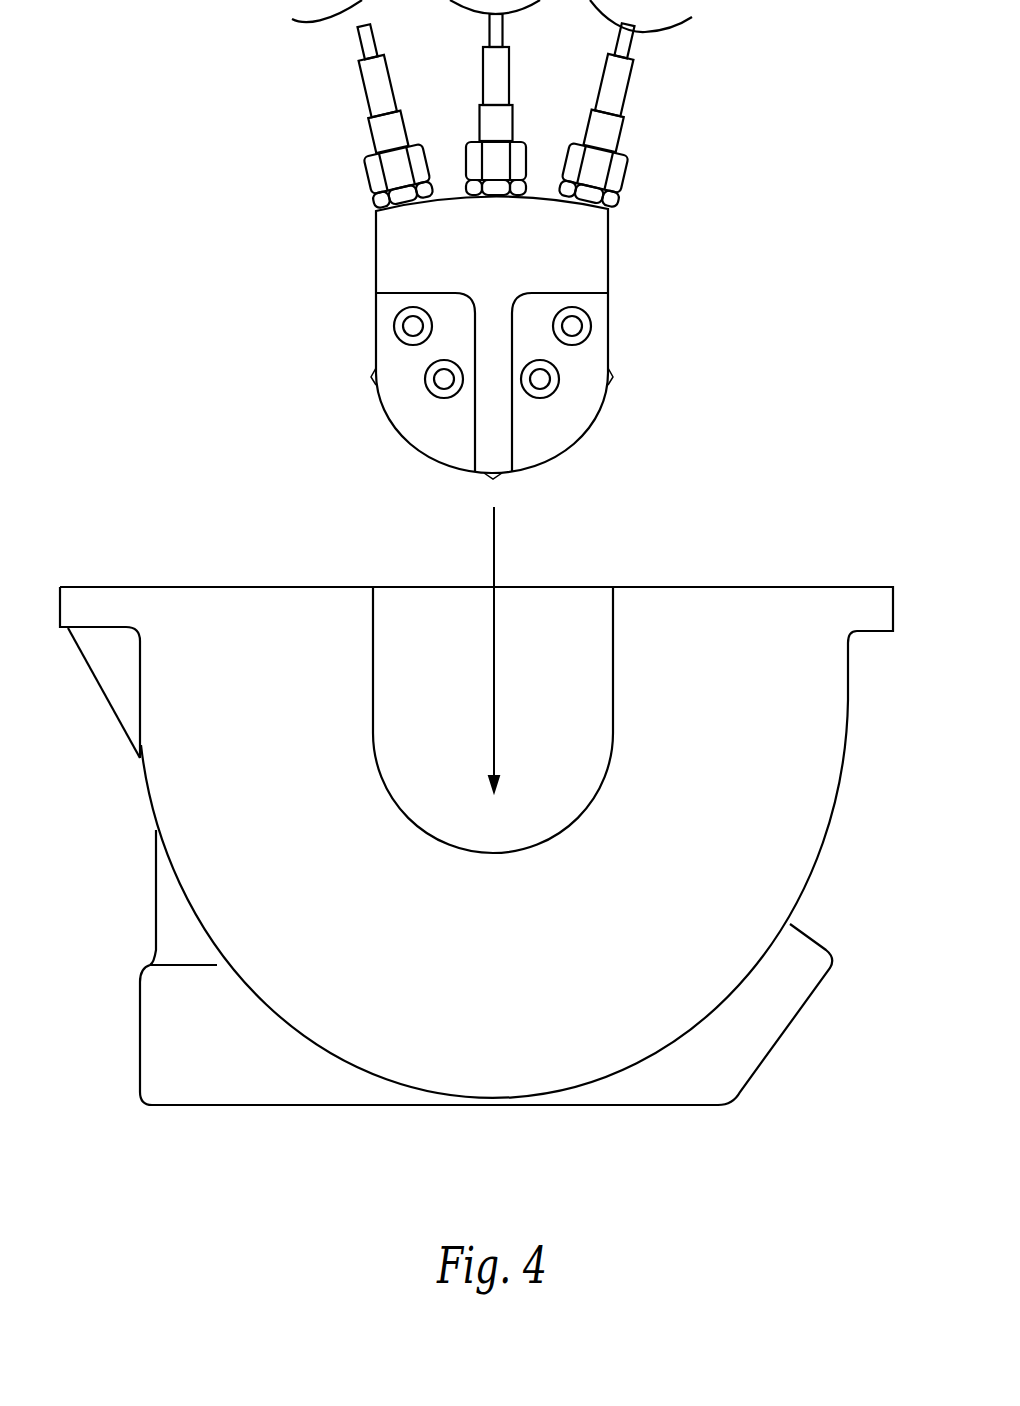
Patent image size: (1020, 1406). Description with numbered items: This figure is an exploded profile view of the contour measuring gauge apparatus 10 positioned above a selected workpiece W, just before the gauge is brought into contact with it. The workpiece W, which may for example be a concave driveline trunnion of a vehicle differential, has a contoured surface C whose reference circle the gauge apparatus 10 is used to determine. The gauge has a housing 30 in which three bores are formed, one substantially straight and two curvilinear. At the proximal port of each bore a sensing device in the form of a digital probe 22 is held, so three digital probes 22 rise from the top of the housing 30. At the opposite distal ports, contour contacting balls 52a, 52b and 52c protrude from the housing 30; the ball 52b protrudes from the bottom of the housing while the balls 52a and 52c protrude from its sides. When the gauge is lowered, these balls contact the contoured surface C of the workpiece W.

The contour measuring gauge apparatus 10 is at (298, 160).
The digital probes 22 is at (381, 99).
The housing 30 is at (562, 242).
The contour contacting ball 52a is at (375, 378).
The contour contacting ball 52b is at (490, 478).
The contour contacting ball 52c is at (610, 380).
The contoured surface C is at (435, 836).
The workpiece W is at (762, 820).